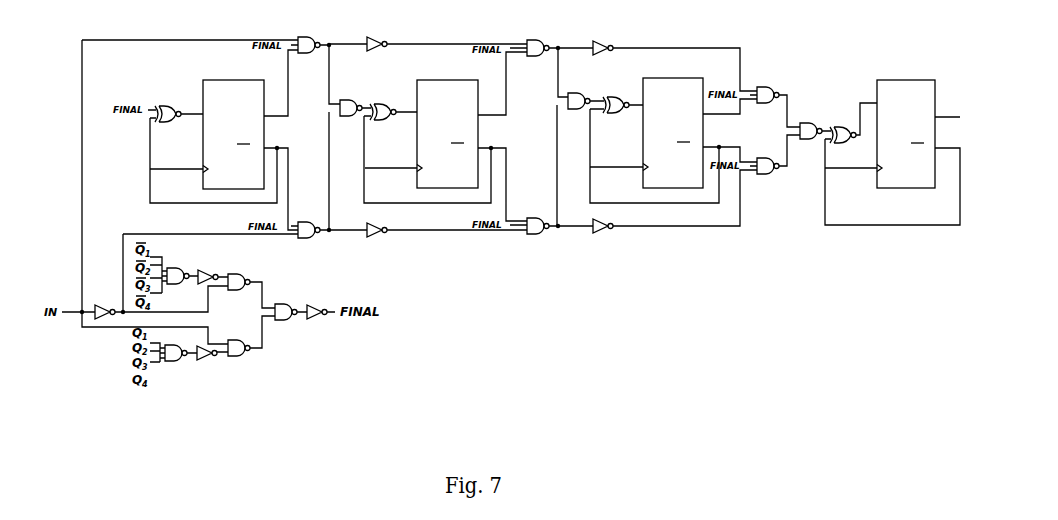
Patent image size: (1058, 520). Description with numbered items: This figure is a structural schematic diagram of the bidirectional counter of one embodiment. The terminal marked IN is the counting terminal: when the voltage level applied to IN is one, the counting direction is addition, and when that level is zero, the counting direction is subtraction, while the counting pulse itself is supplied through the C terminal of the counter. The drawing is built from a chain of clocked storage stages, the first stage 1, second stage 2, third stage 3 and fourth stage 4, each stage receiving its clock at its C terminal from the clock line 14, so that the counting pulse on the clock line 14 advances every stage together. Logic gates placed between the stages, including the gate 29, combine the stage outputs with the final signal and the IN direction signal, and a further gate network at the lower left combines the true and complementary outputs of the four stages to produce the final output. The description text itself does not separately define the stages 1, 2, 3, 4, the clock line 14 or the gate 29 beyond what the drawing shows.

The NAND gate 29 is at (579, 95).
The OUT_14 clock signal line 14 is at (513, 164).
The first flip-flop (Q1) 1 is at (906, 134).
The second flip-flop (Q2) 2 is at (673, 133).
The third flip-flop (Q3) 3 is at (447, 134).
The fourth flip-flop (Q4) 4 is at (233, 134).